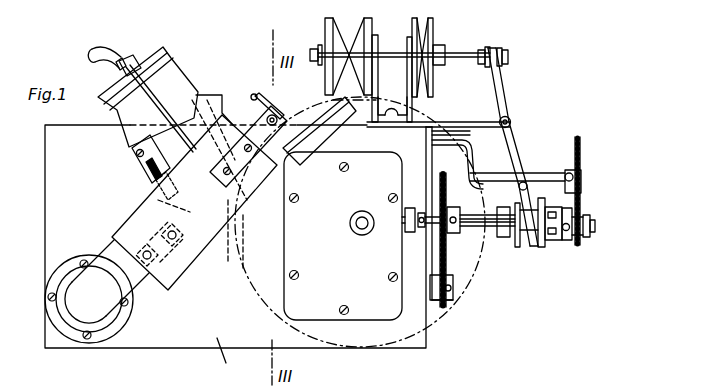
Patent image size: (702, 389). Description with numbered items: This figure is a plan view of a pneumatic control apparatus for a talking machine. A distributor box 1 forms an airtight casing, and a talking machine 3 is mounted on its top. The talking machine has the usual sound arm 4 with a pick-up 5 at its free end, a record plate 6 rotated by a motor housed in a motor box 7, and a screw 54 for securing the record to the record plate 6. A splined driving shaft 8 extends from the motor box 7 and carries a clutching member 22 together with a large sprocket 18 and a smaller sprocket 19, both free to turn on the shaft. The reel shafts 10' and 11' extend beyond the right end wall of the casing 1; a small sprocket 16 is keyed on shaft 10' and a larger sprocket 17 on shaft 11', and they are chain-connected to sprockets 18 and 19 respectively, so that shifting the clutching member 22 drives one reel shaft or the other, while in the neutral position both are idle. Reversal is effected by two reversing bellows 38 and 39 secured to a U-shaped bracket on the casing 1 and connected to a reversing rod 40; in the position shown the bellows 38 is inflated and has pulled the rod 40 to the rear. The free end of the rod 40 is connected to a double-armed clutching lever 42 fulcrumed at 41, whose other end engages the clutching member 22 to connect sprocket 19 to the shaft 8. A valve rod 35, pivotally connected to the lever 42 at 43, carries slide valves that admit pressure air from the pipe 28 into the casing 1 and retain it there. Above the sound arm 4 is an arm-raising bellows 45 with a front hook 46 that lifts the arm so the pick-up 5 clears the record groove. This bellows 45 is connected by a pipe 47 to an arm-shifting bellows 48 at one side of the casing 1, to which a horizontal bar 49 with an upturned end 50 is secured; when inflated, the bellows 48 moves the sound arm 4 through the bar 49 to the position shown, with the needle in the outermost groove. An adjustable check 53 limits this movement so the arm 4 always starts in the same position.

The distributor box 1 is at (190, 349).
The talking machine 3 is at (227, 360).
The sound arm 4 is at (137, 283).
The pick-up 5 is at (306, 113).
The record plate 6 is at (434, 323).
The motor box 7 is at (317, 318).
The driving shaft 8 is at (478, 227).
The shaft of reel 10 10' is at (467, 292).
The shaft of reel 11 11' is at (544, 183).
The sprocket 16 is at (448, 304).
The sprocket 17 is at (580, 148).
The sprocket 18 is at (446, 248).
The sprocket 19 is at (576, 243).
The clutching member 22 is at (531, 248).
The pipe 28 is at (219, 95).
The valve rod 35 is at (468, 149).
The reversing bellows 38 is at (334, 33).
The reversing bellows 39 is at (433, 37).
The reversing rod 40 is at (466, 60).
The fulcrum 41 is at (511, 122).
The clutching lever 42 is at (521, 144).
The pivot connection 43 is at (527, 183).
The arm-raising bellows 45 is at (118, 228).
The hook 46 is at (268, 113).
The pipe 47 is at (103, 51).
The arm-shifting bellows 48 is at (167, 60).
The horizontal bar 49 is at (155, 100).
The upturned end 50 is at (219, 252).
The adjustable check 53 is at (152, 182).
The screw 54 is at (361, 229).